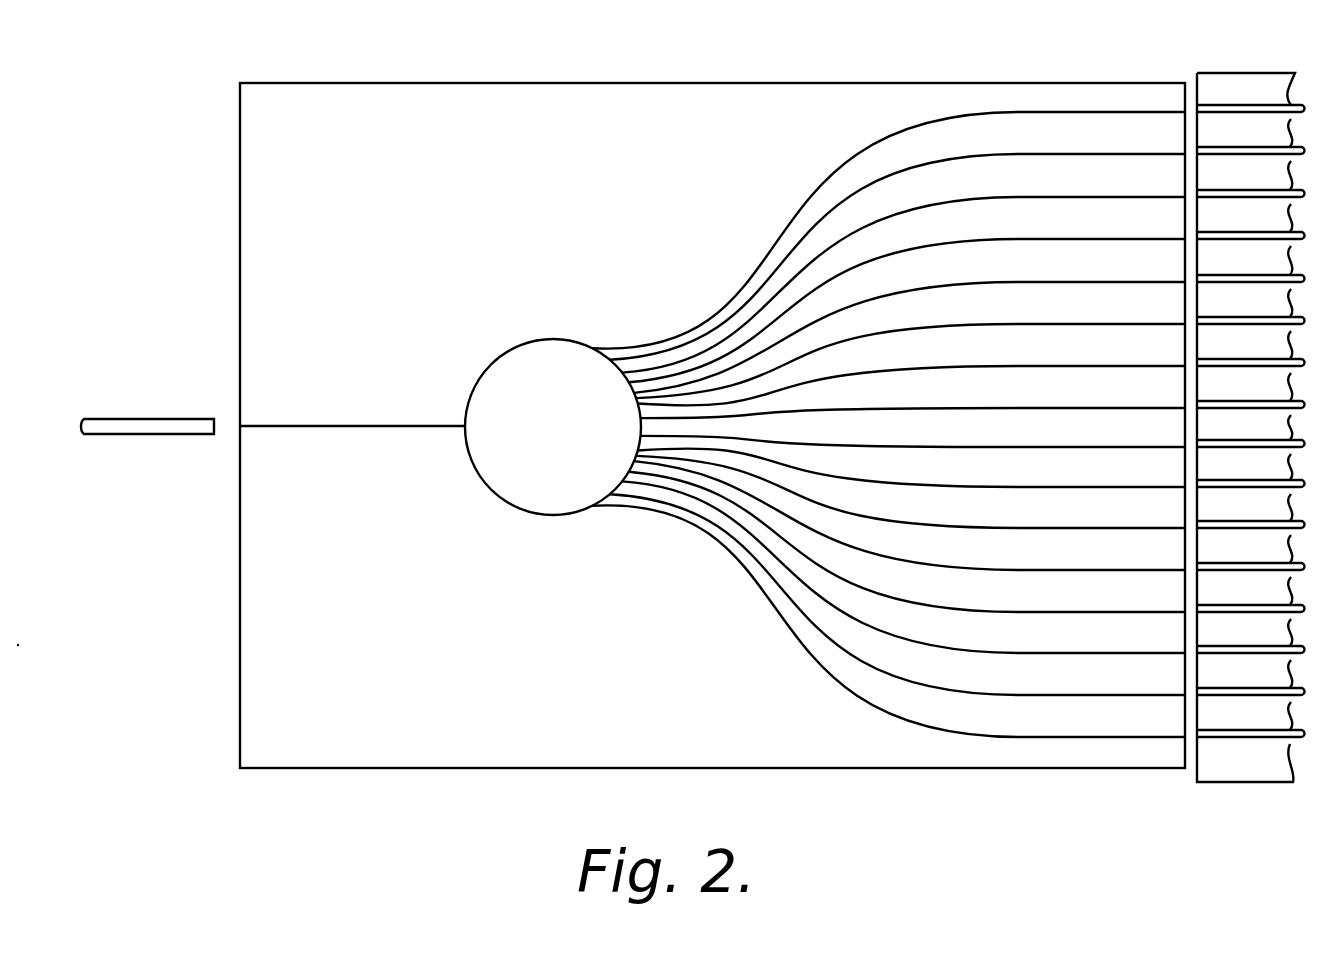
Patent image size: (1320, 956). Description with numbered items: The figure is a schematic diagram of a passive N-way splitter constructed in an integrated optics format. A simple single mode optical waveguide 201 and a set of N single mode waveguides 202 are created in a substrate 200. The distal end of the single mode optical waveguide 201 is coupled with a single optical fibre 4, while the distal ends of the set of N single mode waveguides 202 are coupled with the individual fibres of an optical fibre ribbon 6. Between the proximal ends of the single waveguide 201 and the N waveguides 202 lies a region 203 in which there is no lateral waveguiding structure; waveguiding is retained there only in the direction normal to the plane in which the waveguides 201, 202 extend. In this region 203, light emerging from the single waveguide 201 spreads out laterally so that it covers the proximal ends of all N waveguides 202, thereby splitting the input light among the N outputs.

The substrate 200 is at (619, 108).
The single mode optical waveguide 201 is at (381, 428).
The set of N single mode waveguides 202 is at (845, 583).
The region 203 is at (548, 360).
The single optical fibre 4 is at (140, 426).
The optical fibre ribbon 6 is at (1234, 92).